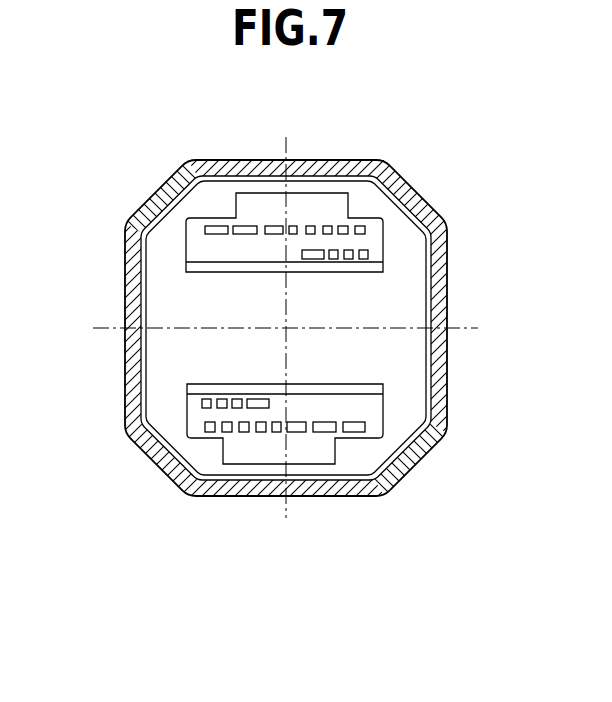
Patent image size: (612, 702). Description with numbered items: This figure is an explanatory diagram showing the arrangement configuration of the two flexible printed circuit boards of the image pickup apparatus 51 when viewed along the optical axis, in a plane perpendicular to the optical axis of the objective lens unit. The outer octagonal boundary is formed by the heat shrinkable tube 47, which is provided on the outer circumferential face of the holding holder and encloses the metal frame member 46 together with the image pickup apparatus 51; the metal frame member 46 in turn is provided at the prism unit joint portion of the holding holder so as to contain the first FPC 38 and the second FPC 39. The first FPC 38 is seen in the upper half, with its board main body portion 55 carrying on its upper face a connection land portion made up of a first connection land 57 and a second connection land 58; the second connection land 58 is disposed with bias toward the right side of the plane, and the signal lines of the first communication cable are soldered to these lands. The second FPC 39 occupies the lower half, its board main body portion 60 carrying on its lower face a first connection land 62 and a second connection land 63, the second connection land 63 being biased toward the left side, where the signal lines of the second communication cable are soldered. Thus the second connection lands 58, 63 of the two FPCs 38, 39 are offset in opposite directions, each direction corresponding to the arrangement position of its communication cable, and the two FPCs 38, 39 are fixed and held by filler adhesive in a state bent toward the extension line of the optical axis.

The first FPC 38 is at (348, 194).
The second FPC 39 is at (277, 470).
The metal frame member 46 is at (430, 354).
The heat shrinkable tube 47 is at (400, 186).
The image pickup apparatus 51 is at (306, 130).
The board main body portion 55 is at (375, 232).
The first connection land 57 is at (262, 225).
The second connection land 58 is at (344, 262).
The board main body portion 60 is at (370, 408).
The first connection land 62 is at (235, 430).
The second connection land 63 is at (232, 405).